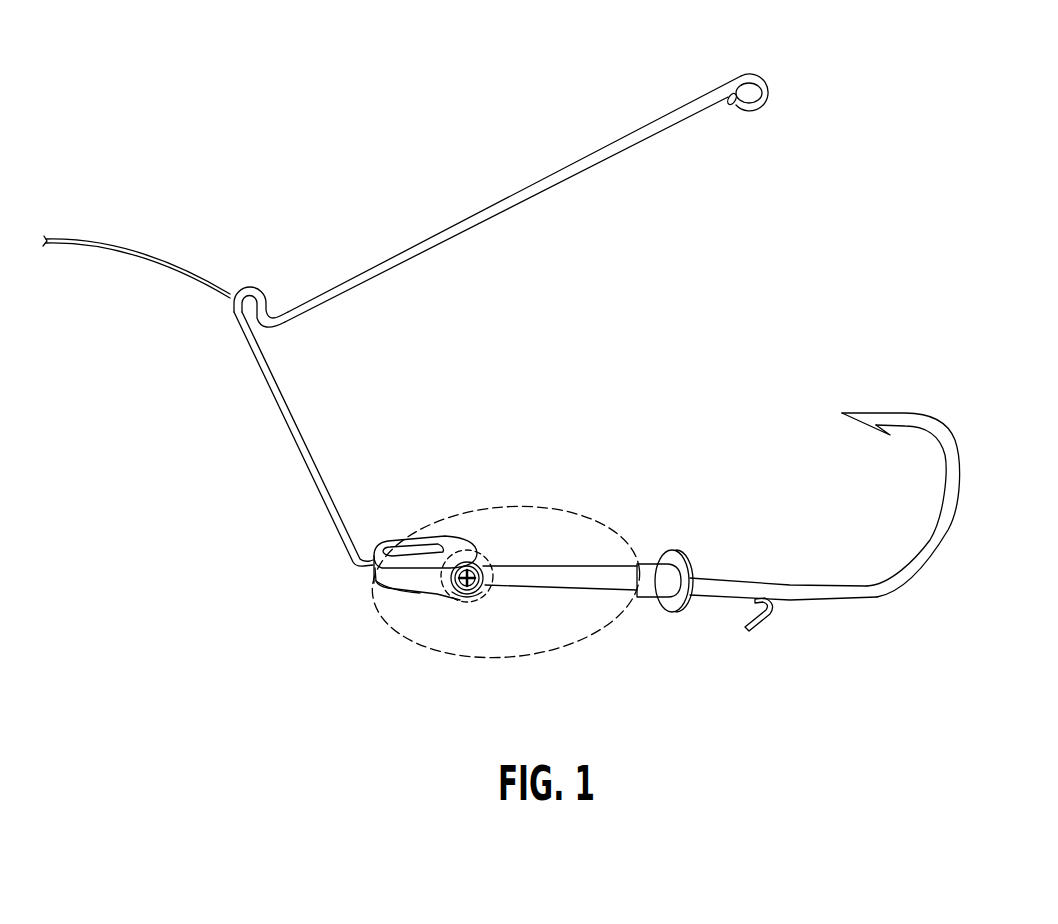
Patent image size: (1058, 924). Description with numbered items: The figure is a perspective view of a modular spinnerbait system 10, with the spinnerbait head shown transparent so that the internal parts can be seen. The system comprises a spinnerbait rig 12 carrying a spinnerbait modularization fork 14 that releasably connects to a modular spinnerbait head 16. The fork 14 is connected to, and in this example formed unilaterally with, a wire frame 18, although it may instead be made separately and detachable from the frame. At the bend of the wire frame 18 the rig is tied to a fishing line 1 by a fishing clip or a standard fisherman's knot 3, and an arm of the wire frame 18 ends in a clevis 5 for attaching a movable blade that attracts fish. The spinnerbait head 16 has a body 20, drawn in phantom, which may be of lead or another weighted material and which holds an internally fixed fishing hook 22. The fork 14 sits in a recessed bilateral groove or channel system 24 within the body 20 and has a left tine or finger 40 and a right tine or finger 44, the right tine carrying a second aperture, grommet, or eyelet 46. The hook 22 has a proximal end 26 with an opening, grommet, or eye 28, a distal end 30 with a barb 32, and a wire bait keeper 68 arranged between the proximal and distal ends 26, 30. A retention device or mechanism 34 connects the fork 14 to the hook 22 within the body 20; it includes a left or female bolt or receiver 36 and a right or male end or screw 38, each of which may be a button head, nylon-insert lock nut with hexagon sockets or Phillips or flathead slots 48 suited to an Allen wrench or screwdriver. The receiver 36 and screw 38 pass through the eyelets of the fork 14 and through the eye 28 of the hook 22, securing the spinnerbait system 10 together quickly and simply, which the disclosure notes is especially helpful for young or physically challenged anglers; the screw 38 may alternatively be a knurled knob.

The fishing line 1 is at (100, 248).
The fisherman's knot 3 is at (238, 290).
The clevis 5 is at (760, 102).
The modular spinnerbait system 10 is at (889, 101).
The spinnerbait rig 12 is at (563, 411).
The spinnerbait modularization fork 14 is at (366, 580).
The modular spinnerbait head 16 is at (619, 636).
The wire frame 18 is at (290, 402).
The body 20 is at (541, 660).
The fishing hook 22 is at (790, 585).
The channel system 24 is at (400, 578).
The proximal end 26 is at (460, 542).
The eye 28 is at (441, 545).
The distal end 30 is at (933, 394).
The barb 32 is at (846, 413).
The retention device 34 is at (462, 530).
The receiver 36 is at (428, 544).
The screw 38 is at (460, 593).
The left tine 40 is at (413, 551).
The right tine 44 is at (432, 578).
The second eyelet 46 is at (460, 590).
The slots 48 is at (492, 548).
The wire bait keeper 68 is at (751, 642).